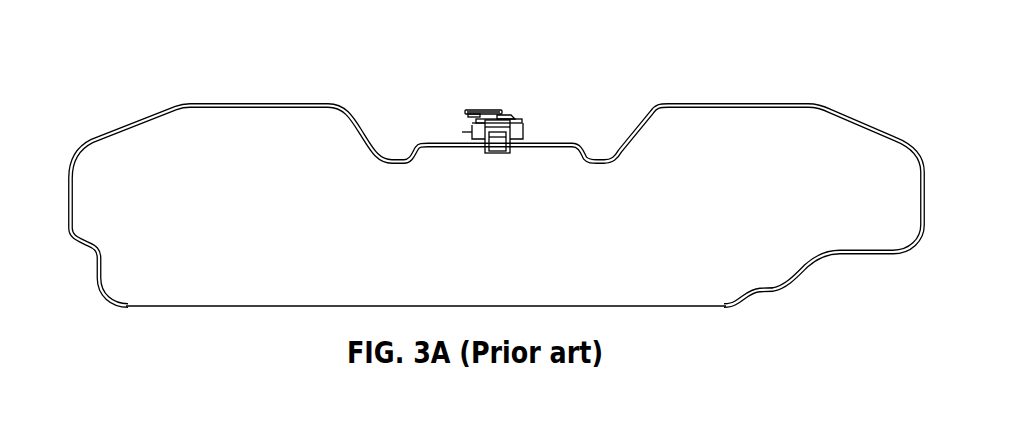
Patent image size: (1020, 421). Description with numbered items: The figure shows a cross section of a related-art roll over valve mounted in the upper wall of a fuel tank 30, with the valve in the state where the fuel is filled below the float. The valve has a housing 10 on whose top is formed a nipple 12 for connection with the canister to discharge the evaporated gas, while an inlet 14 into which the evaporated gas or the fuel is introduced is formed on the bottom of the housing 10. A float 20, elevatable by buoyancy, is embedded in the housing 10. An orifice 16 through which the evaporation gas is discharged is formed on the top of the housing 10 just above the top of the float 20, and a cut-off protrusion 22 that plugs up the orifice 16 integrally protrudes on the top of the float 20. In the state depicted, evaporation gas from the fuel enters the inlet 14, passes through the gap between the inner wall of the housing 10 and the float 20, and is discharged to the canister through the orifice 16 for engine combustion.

The fuel tank 30 is at (252, 104).
The housing 10 is at (524, 141).
The nipple 12 is at (470, 110).
The inlet 14 is at (497, 152).
The orifice 16 is at (488, 119).
The float 20 is at (478, 122).
The cut-off protrusion 22 is at (508, 119).